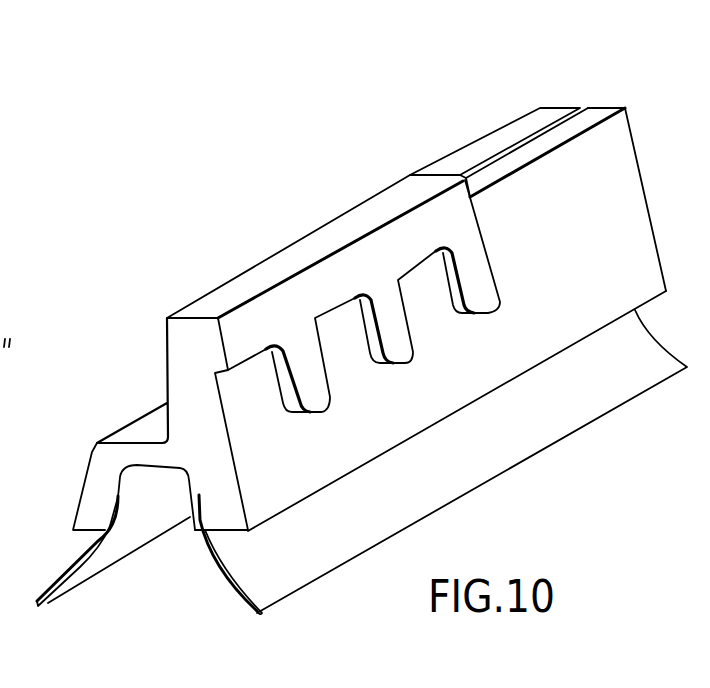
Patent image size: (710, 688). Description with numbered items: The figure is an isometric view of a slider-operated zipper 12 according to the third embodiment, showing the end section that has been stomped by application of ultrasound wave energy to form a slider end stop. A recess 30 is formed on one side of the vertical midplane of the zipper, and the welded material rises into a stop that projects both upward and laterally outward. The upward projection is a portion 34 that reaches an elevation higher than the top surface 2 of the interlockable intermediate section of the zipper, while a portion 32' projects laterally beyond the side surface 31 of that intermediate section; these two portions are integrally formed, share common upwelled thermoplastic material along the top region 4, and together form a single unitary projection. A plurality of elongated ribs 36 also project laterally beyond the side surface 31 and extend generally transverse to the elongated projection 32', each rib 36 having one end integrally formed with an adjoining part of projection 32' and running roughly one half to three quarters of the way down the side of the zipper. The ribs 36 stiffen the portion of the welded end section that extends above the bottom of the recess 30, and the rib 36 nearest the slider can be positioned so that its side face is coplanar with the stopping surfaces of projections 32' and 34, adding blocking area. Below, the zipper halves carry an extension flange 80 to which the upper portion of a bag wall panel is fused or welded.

The bracket assembly 12 is at (533, 97).
The upper edge 2 is at (590, 108).
The top strip / hem 4 is at (498, 142).
The side surface 31 is at (620, 187).
The recess 30 is at (138, 360).
The laterally projecting portion 32' is at (318, 246).
The upwardly projecting portion 34 is at (232, 290).
The elongated ribs 36 is at (308, 377).
The extension flange 80 is at (72, 572).